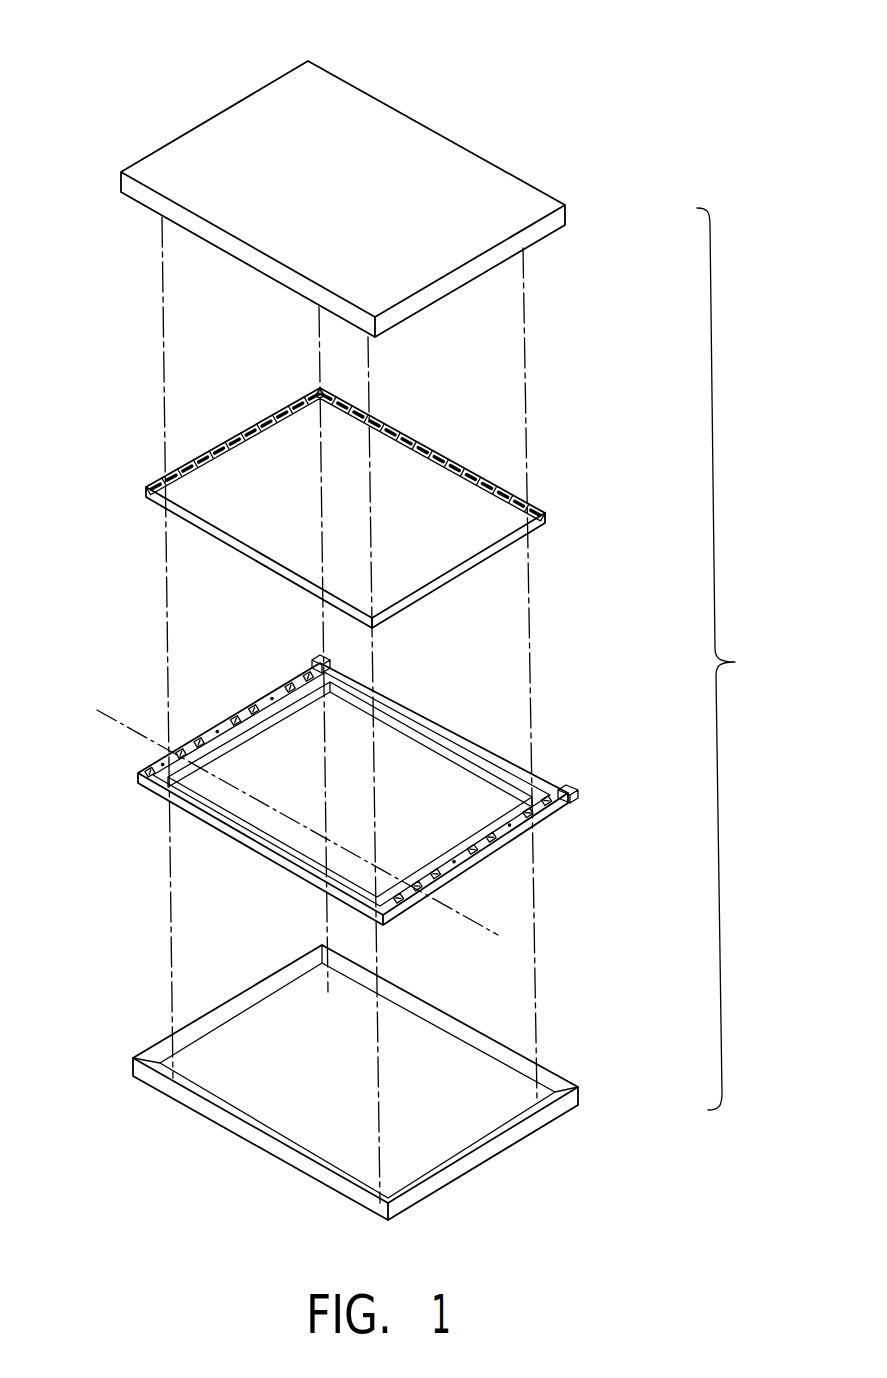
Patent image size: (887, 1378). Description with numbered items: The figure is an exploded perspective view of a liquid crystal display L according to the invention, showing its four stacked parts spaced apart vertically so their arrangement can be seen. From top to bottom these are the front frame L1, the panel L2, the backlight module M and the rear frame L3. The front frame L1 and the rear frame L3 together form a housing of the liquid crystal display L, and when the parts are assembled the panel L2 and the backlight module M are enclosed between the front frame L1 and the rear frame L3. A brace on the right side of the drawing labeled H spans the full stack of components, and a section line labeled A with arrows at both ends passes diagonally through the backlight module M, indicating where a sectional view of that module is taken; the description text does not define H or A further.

The liquid crystal display L is at (52, 32).
The front frame L1 is at (570, 212).
The panel L2 is at (560, 514).
The backlight module M is at (573, 800).
The rear frame L3 is at (588, 1095).
The housing / overall stack height H is at (763, 677).
The section line A- A is at (107, 718).